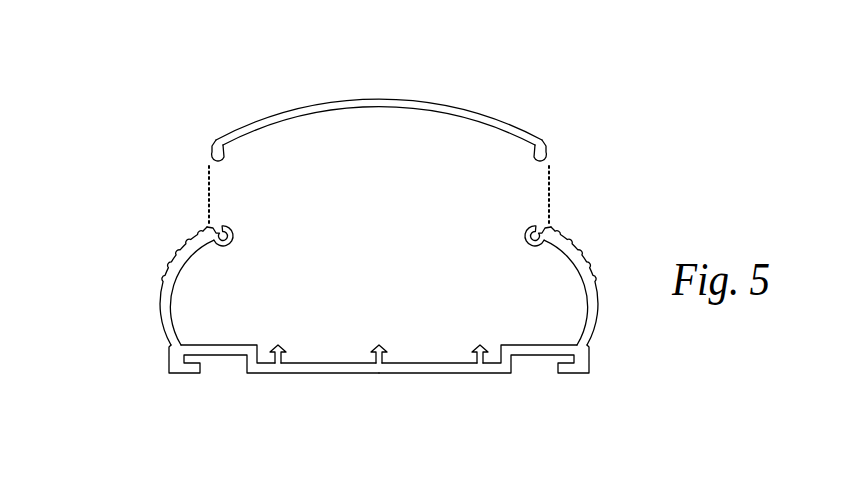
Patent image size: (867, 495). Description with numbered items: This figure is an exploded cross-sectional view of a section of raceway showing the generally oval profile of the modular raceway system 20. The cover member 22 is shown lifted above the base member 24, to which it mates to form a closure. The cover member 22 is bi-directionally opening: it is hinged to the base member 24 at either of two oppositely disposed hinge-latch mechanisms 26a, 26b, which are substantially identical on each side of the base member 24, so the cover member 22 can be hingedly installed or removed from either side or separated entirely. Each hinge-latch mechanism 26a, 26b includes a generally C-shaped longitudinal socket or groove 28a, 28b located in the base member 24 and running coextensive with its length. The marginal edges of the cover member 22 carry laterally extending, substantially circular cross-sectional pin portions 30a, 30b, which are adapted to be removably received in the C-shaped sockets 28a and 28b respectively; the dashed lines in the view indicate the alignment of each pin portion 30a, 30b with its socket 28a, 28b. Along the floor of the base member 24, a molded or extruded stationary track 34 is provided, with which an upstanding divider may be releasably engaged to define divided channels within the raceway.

The modular raceway system 20 is at (349, 334).
The cover member 22 is at (357, 99).
The base member 24 is at (597, 315).
The hinge-latch mechanism 26a is at (200, 198).
The hinge-latch mechanism 26b is at (562, 202).
The C-shaped longitudinal socket 28a is at (233, 235).
The C-shaped longitudinal socket 28b is at (525, 232).
The pin portion 30a is at (205, 150).
The pin portion 30b is at (550, 155).
The stationary track 34 is at (371, 352).